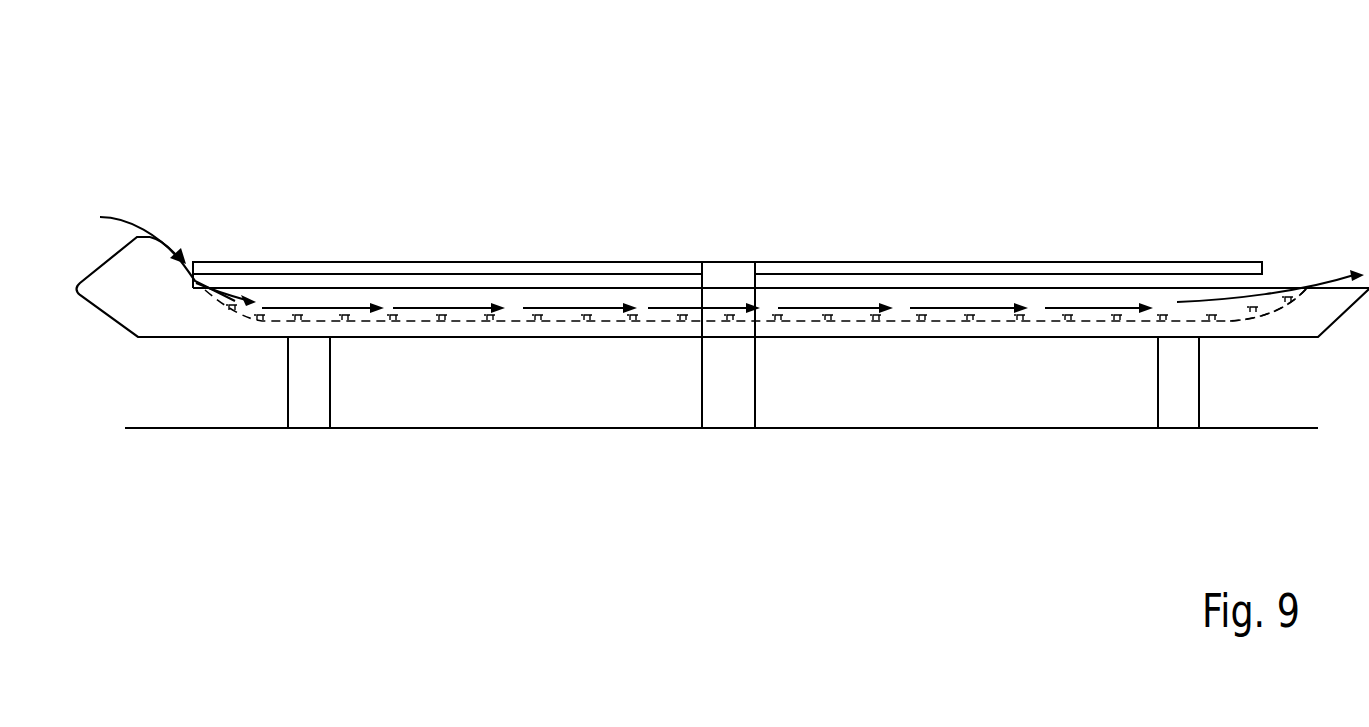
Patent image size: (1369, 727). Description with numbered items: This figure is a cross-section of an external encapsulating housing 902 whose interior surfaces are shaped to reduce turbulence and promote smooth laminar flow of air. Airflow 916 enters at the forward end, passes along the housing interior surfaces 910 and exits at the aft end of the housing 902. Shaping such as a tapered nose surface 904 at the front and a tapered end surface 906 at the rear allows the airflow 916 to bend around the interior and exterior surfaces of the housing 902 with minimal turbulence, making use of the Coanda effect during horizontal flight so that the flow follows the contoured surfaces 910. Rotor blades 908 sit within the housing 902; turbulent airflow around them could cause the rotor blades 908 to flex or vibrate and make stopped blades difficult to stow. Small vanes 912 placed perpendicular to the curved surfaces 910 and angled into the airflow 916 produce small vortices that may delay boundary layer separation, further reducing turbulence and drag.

The encapsulating housing 902 is at (930, 31).
The tapered nose surface 904 is at (191, 270).
The tapered end surface 906 is at (1267, 312).
The rotor blades 908 is at (502, 266).
The housing interior surfaces 910 is at (245, 318).
The vanes 912 is at (393, 322).
The airflow 916 is at (158, 230).